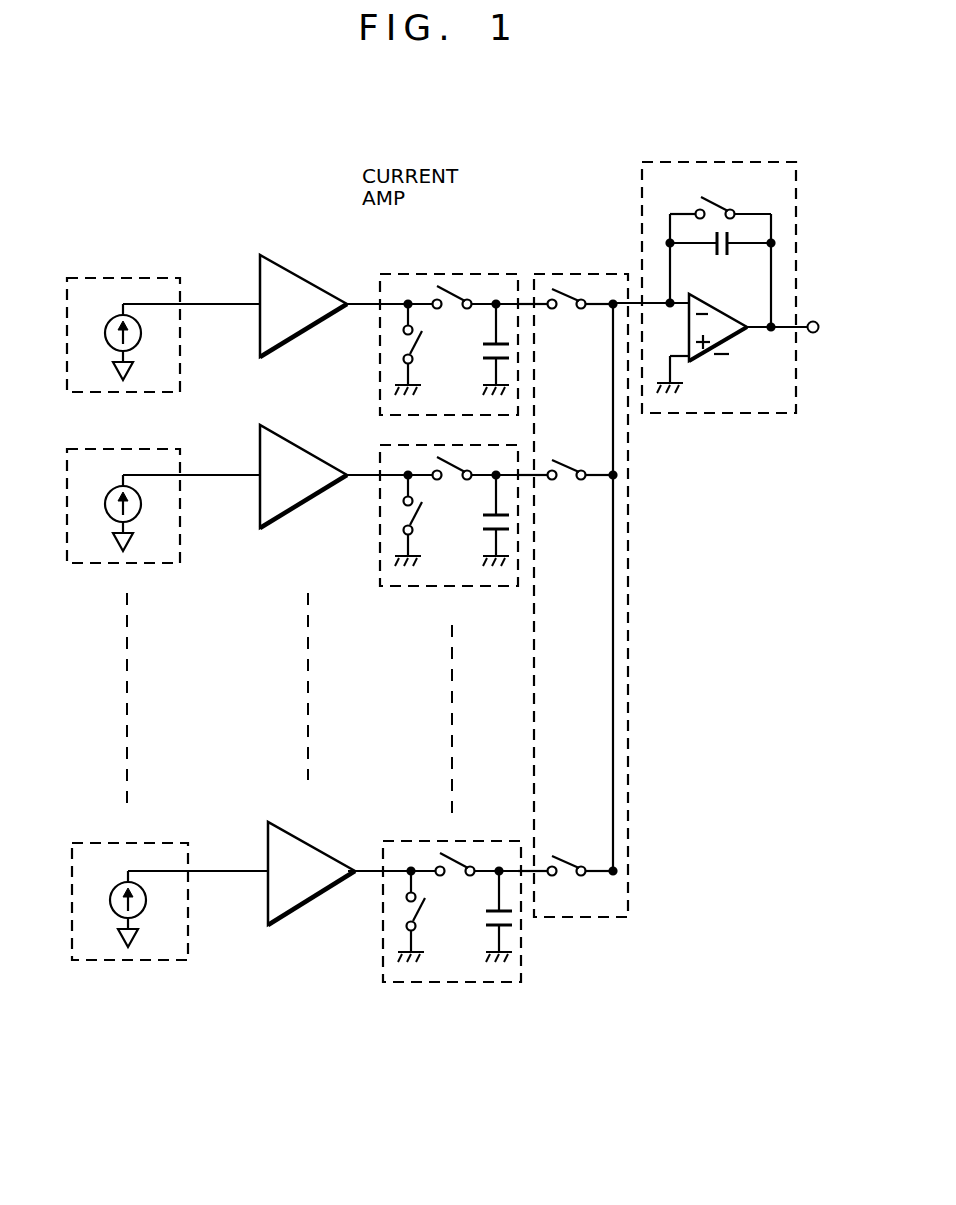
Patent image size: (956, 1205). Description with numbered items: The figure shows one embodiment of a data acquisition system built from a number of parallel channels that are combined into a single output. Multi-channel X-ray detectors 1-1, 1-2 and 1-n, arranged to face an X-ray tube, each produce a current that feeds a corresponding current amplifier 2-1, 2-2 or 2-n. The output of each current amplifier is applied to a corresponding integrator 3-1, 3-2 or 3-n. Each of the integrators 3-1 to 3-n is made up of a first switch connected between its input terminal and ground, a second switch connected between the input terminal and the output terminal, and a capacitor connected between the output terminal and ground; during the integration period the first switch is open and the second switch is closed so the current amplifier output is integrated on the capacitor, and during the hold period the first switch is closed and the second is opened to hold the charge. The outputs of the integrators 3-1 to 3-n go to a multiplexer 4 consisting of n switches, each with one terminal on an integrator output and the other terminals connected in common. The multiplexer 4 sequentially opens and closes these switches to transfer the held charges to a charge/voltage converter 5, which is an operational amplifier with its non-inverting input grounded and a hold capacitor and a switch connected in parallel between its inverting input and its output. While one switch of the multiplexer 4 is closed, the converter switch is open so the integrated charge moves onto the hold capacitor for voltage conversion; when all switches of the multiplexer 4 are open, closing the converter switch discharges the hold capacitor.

The multi-channel X-ray detector 1-1 is at (118, 278).
The multi-channel X-ray detector 1-2 is at (118, 449).
The multi-channel X-ray detector 1-n is at (123, 960).
The current amplifier 2-1 is at (290, 265).
The current amplifier 2-2 is at (337, 423).
The current amplifier 2-n is at (320, 898).
The integrator 3-1 is at (440, 274).
The integrator 3-2 is at (428, 587).
The integrator 3-n is at (443, 983).
The multiplexer 4 is at (577, 274).
The charge/voltage converter 5 is at (718, 162).